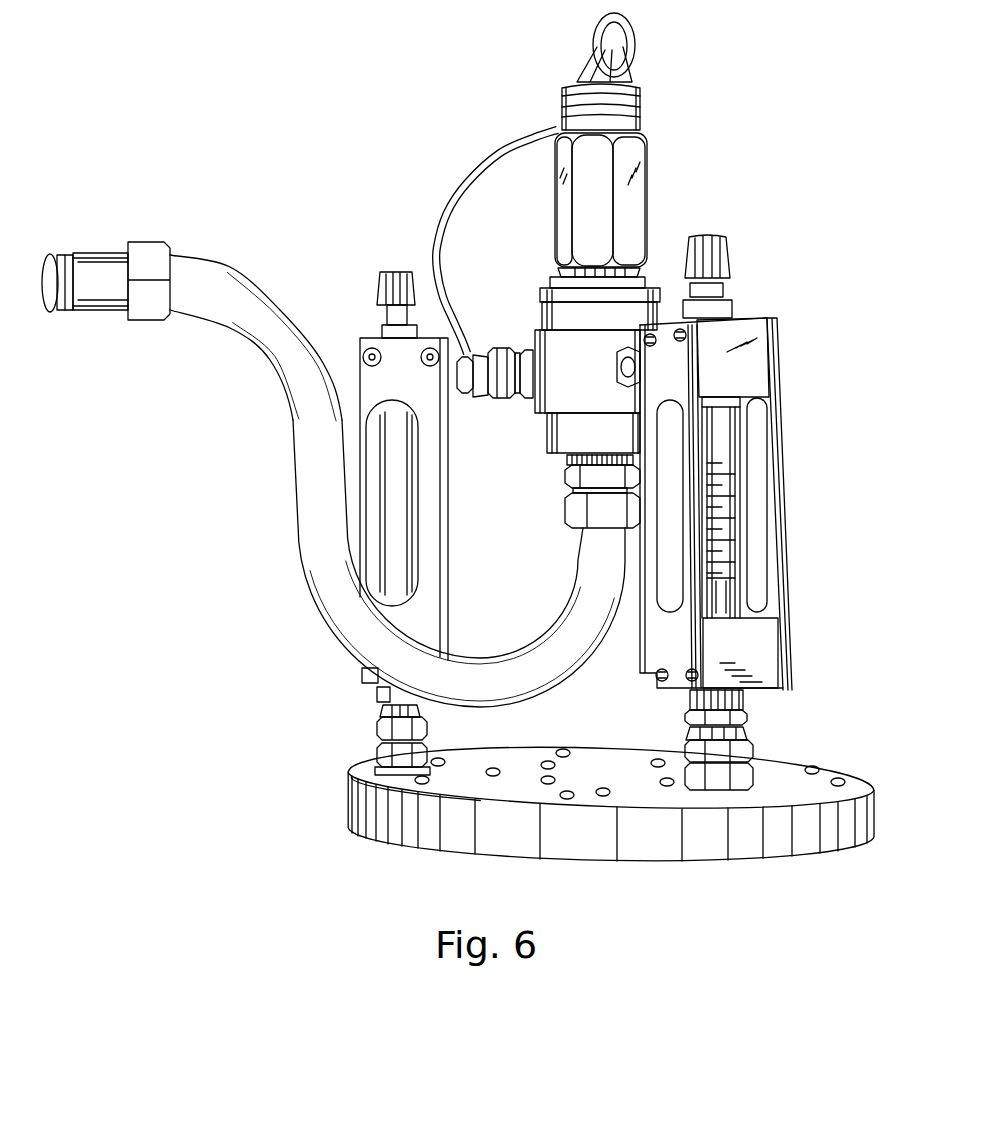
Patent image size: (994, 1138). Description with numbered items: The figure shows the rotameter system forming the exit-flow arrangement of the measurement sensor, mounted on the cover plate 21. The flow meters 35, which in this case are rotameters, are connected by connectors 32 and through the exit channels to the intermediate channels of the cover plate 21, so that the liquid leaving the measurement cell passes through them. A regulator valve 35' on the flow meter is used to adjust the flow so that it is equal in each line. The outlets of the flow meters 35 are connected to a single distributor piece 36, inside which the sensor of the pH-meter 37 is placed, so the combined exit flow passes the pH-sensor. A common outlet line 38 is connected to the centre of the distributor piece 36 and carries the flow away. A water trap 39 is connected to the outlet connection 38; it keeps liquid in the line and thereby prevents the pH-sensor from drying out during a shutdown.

The cover plate 21 is at (828, 783).
The connector 32 is at (745, 775).
The flow meter 35 is at (765, 504).
The regulator valve 35' is at (767, 272).
The distributor piece 36 is at (592, 352).
The pH-meter 37 is at (627, 157).
The common outlet line 38 is at (237, 302).
The water trap 39 is at (365, 640).